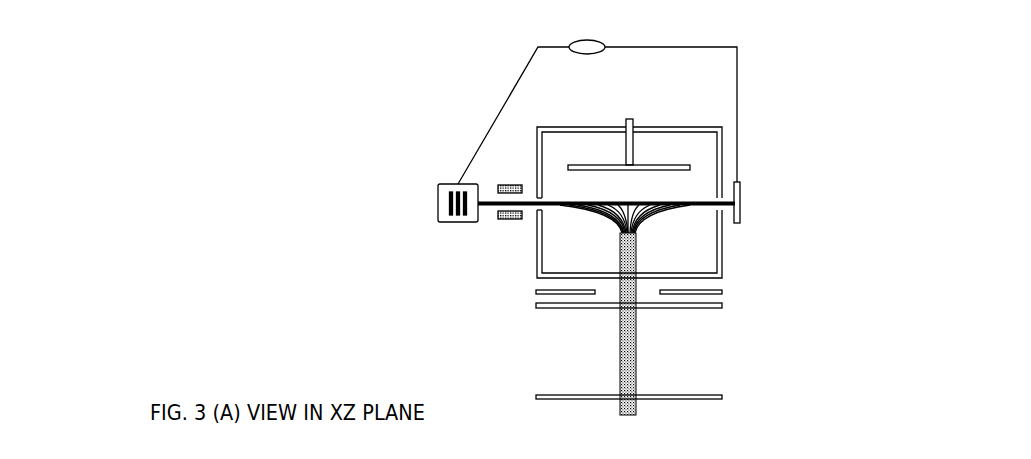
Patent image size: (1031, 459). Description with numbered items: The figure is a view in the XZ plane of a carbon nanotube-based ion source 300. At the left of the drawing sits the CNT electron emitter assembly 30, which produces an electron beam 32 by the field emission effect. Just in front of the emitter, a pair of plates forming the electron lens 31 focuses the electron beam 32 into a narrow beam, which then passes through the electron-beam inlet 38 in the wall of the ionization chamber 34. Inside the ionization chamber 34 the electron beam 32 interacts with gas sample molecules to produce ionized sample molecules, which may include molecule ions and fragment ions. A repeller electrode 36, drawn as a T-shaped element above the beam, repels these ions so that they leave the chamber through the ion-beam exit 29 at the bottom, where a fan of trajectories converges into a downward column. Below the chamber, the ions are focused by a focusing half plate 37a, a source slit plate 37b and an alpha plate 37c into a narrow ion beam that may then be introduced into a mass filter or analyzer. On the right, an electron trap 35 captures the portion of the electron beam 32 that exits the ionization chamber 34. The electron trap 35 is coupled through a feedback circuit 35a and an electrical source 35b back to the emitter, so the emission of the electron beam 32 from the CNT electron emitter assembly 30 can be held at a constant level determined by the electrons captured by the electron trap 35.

The ion source 300 is at (382, 103).
The ionization chamber 34 is at (533, 127).
The repeller electrode 36 is at (634, 144).
The CNT electron emitter assembly 30 is at (452, 230).
The electron lens 31 is at (507, 227).
The electron-beam inlet 38 is at (536, 207).
The electron beam 32 is at (706, 210).
The feedback circuit 35a is at (740, 83).
The electrical source 35b is at (603, 37).
The electron trap 35 is at (748, 173).
The ion-beam exit 29 is at (617, 281).
The focusing half plate 37a is at (651, 283).
The source slit plate 37b is at (651, 310).
The alpha plate 37c is at (654, 396).